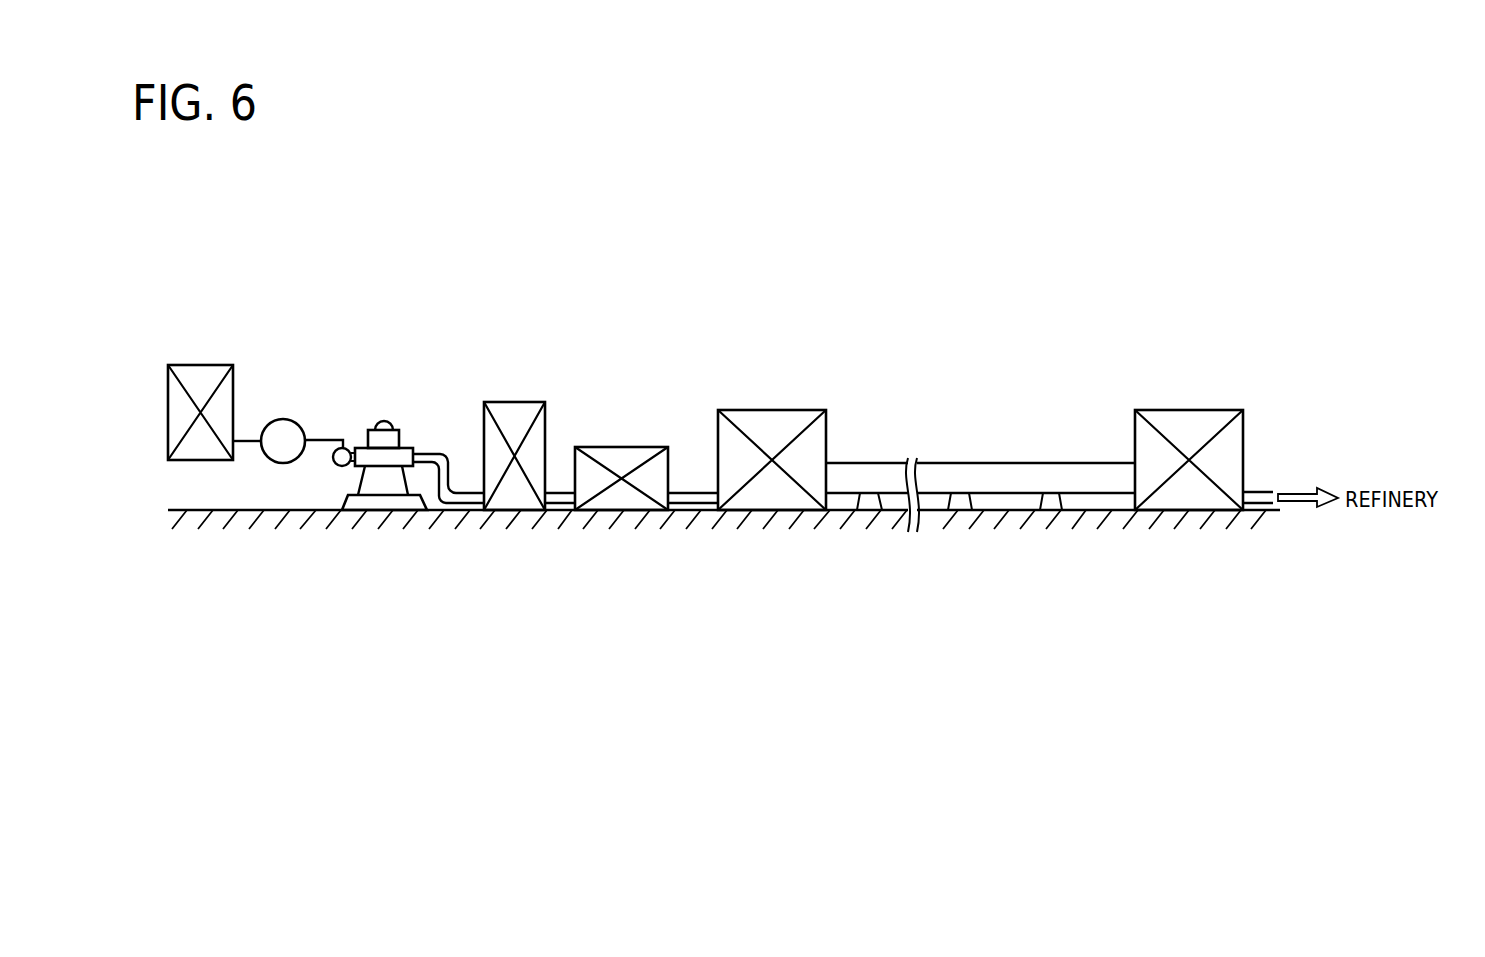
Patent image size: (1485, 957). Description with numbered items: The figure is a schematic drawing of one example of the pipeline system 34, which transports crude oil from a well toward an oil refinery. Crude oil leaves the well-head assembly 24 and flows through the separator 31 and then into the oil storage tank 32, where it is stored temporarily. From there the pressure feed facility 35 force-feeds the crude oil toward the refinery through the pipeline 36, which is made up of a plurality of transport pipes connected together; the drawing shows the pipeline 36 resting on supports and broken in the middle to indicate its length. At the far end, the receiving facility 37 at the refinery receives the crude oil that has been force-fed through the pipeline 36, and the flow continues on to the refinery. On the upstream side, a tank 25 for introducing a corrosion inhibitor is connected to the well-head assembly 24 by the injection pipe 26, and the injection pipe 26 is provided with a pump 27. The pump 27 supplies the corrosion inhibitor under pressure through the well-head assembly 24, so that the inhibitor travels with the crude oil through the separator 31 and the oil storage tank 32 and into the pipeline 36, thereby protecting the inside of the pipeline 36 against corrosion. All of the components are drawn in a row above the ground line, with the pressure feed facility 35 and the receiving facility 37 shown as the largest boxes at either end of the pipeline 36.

The well-head assembly 24 is at (398, 458).
The tank 25 is at (202, 365).
The injection pipe 26 is at (320, 439).
The pump 27 is at (283, 419).
The separator 31 is at (515, 402).
The oil storage tank 32 is at (622, 447).
The pipeline system 34 is at (1124, 275).
The pressure feed facility 35 is at (772, 410).
The pipeline 36 is at (998, 463).
The receiving facility 37 is at (1188, 410).